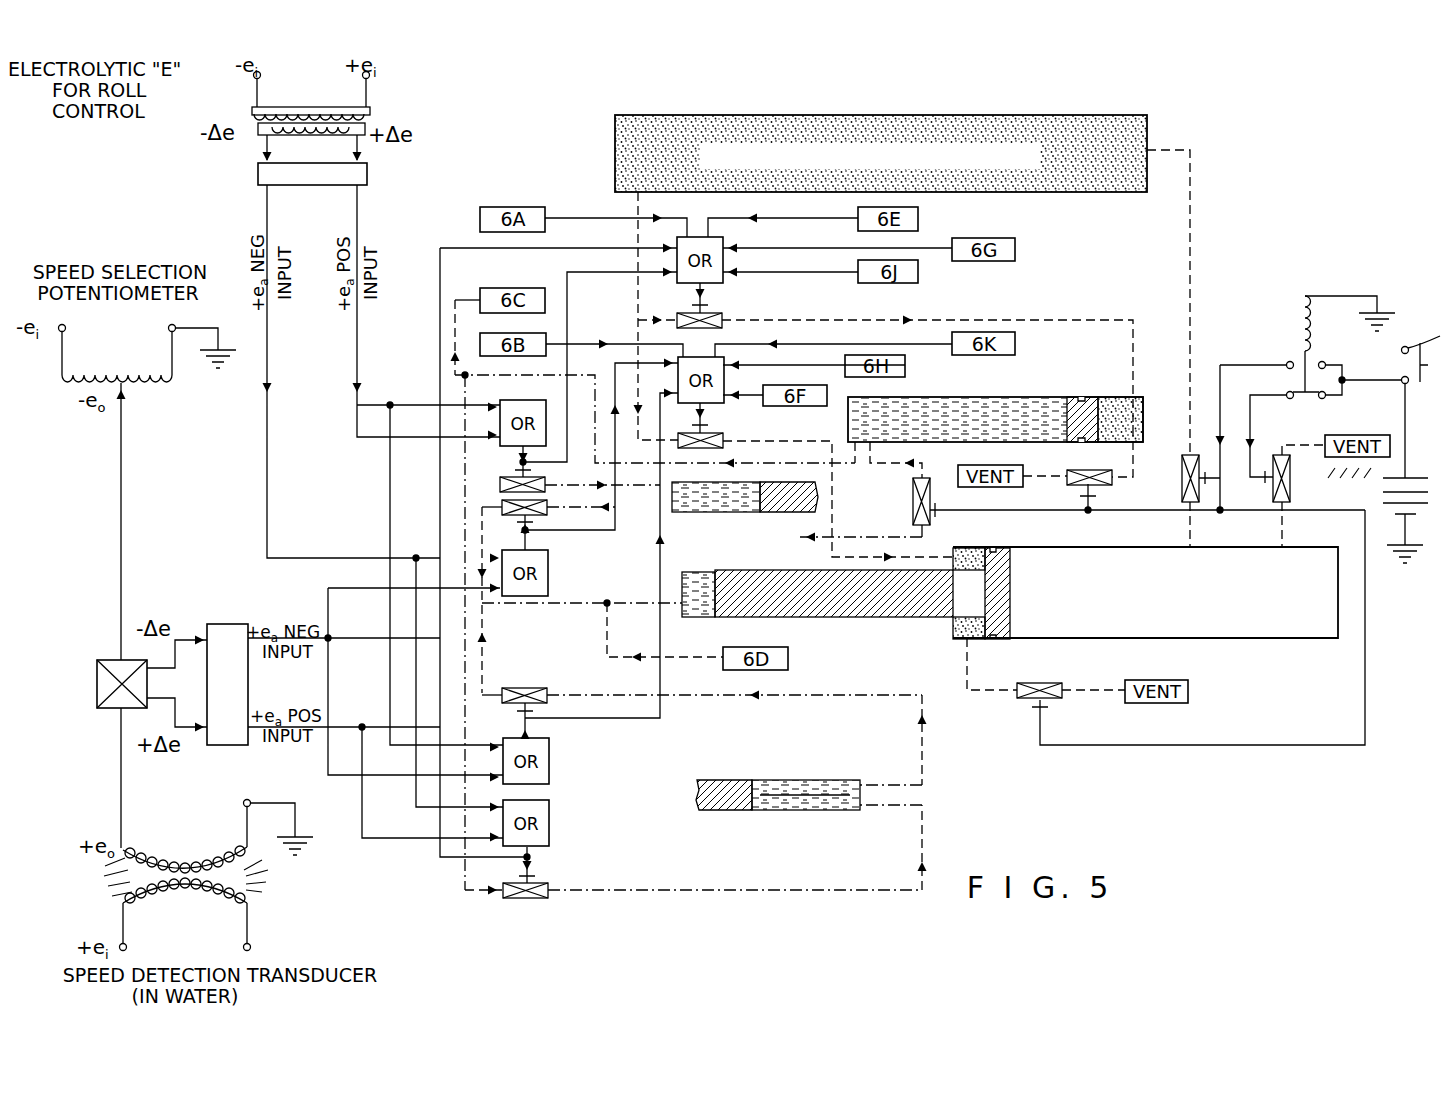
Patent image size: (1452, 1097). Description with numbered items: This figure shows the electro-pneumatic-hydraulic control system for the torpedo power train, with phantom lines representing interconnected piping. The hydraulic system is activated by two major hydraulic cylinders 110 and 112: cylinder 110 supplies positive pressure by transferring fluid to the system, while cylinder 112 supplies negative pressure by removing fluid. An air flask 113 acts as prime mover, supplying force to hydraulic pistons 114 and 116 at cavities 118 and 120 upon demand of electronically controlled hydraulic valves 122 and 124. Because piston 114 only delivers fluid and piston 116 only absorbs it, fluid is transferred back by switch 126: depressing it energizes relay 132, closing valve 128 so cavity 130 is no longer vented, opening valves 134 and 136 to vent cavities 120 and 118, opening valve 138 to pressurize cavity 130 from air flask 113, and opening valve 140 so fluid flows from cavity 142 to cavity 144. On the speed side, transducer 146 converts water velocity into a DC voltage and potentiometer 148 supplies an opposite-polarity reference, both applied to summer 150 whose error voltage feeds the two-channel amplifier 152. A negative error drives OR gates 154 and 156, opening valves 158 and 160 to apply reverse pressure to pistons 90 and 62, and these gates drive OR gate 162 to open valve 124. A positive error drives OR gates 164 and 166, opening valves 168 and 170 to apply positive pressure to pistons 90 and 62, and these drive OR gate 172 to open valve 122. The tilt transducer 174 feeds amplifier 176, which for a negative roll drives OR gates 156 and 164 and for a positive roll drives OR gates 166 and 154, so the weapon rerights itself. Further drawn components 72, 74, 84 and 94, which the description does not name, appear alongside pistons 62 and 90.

The air flask 113 is at (845, 114).
The transducer 174 is at (332, 100).
The amplifier 176 is at (367, 176).
The potentiometer 148 is at (140, 363).
The electronic summer 150 is at (96, 676).
The amplifier 152 is at (250, 681).
The transducer 146 is at (200, 839).
The OR gate 166 is at (505, 390).
The valve 170 is at (500, 486).
The valve 160 is at (547, 510).
The OR gate 156 is at (548, 568).
The valve 158 is at (527, 688).
The OR gate 154 is at (549, 756).
The OR gate 164 is at (549, 820).
The valve 168 is at (548, 898).
The OR gate 172 is at (723, 276).
The hydraulic valve 122 is at (722, 316).
The OR gate 162 is at (723, 397).
The hydraulic valve 124 is at (723, 437).
The cylinder 72 is at (703, 497).
The piston 74 is at (757, 512).
The piston 62 is at (850, 527).
The cavity 142 is at (712, 612).
The hydraulic piston 116 is at (897, 618).
The cavity 120 is at (955, 633).
The hydraulic cylinder 112 is at (1215, 640).
The cavity 130 is at (1293, 615).
The valve 134 is at (1047, 683).
The hydraulic cylinder 110 is at (946, 397).
The cavity 144 is at (992, 414).
The hydraulic piston 114 is at (1085, 396).
The cavity 118 is at (1127, 412).
The valve 140 is at (913, 486).
The valve 136 is at (1100, 484).
The valve 138 is at (1182, 478).
The valve 128 is at (1290, 487).
The relay 132 is at (1298, 322).
The switch 126 is at (1440, 336).
The cylinder 84 is at (812, 780).
The piston 90 is at (727, 780).
The fluid 94 is at (826, 800).